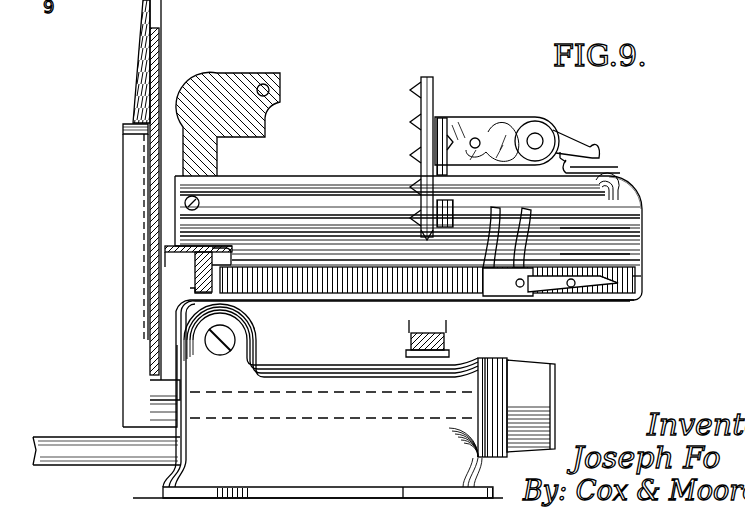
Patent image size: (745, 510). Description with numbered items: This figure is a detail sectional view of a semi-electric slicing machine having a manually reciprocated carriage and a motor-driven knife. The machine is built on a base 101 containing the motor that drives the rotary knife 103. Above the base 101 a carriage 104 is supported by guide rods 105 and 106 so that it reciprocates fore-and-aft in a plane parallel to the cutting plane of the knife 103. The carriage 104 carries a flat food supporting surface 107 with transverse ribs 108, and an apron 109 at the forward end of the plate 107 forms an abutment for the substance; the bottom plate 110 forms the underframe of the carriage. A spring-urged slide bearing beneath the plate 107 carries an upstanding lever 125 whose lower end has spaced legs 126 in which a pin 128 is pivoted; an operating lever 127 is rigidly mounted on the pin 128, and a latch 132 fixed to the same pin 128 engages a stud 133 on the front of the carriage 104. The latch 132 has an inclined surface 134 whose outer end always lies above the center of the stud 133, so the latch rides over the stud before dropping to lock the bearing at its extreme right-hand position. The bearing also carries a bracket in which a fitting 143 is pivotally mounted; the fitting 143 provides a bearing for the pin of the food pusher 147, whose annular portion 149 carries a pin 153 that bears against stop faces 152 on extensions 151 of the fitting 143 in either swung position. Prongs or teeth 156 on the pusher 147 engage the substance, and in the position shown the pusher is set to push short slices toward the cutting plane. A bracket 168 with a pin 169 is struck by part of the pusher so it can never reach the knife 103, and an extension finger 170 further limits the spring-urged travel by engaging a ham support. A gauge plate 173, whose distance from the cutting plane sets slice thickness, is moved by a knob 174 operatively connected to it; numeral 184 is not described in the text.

The base 101 is at (309, 366).
The rotary knife 103 is at (162, 14).
The carriage 104 is at (616, 284).
The guide rod 105 is at (538, 121).
The guide rod 106 is at (538, 142).
The food supporting surface 107 is at (625, 242).
The transverse ribs 108 is at (628, 263).
The apron 109 is at (327, 176).
The bottom plate 110 is at (625, 302).
The upstanding arm or lever 125 is at (495, 207).
The spaced legs 126 is at (497, 290).
The operating lever or arm 127 is at (532, 210).
The pin 128 is at (520, 290).
The latch 132 is at (548, 286).
The pin or stud 133 is at (572, 290).
The inclined surface 134 is at (594, 288).
The fitting 143 is at (598, 169).
The food or substance pusher 147 is at (447, 73).
The annular portion 149 is at (464, 118).
The extensions 151 is at (600, 157).
The stop faces 152 is at (593, 146).
The pin 153 is at (477, 138).
The substance engaging prongs or teeth 156 is at (412, 92).
The bracket 168 is at (233, 73).
The pin 169 is at (265, 84).
The extension finger 170 is at (448, 207).
The gauge plate 173 is at (130, 187).
The knob 174 is at (548, 379).
The ratchet strip 184 is at (345, 272).